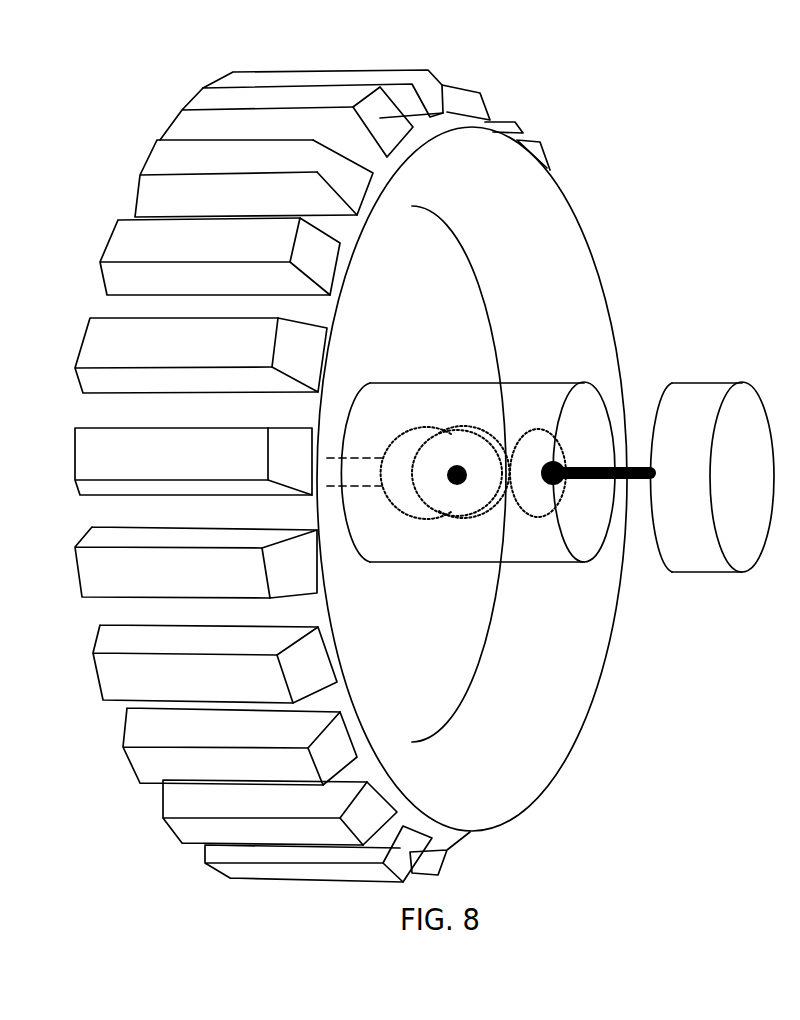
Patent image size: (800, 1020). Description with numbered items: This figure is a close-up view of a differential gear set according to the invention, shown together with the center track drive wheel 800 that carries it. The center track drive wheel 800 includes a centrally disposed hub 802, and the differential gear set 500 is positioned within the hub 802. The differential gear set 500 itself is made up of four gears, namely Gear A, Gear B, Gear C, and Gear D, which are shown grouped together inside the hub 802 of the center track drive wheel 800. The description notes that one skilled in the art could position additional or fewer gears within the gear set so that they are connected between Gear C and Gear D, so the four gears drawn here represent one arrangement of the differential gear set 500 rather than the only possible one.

The center track drive wheel 800 is at (527, 215).
The hub 802 is at (583, 393).
The differential gear set 500 is at (478, 389).
The element Gear A is at (457, 500).
The element Gear B is at (505, 428).
The element Gear C is at (537, 492).
The element Gear D is at (405, 453).